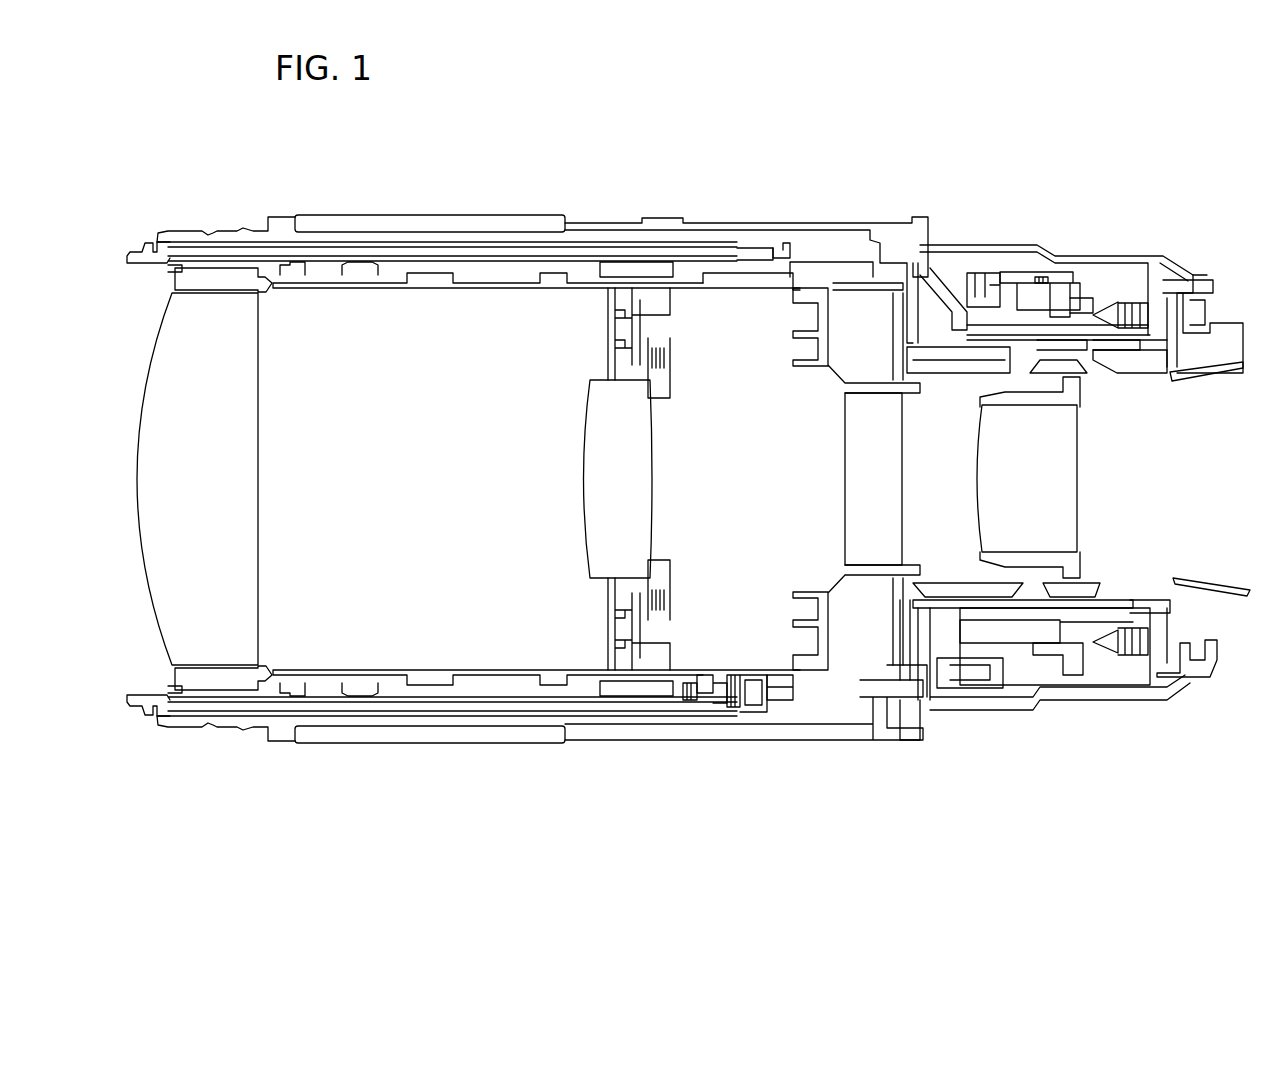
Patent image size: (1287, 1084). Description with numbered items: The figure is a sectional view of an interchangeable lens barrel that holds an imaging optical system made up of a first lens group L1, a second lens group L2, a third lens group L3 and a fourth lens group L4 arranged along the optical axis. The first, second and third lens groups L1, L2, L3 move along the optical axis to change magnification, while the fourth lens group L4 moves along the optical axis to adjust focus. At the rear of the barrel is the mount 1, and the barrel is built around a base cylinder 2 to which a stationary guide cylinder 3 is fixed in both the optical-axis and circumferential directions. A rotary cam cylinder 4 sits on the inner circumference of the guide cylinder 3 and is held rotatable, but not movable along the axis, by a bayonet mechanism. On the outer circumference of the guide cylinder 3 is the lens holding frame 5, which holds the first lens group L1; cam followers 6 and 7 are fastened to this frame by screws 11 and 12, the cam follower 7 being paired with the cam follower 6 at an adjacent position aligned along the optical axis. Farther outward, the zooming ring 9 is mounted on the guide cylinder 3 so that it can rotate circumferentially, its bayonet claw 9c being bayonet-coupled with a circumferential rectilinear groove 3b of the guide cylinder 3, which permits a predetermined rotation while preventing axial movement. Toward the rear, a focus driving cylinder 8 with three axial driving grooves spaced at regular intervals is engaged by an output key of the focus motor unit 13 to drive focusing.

The mount 1 is at (1218, 323).
The base cylinder 2 is at (1108, 257).
The guide cylinder 3 is at (822, 263).
The circumferential rectilinear groove 3b is at (778, 245).
The cam cylinder 4 is at (703, 273).
The lens holding frame 5 is at (467, 252).
The cam follower 6 is at (767, 710).
The cam follower 7 is at (693, 710).
The focus driving cylinder 8 is at (983, 350).
The zooming ring 9 is at (283, 227).
The bayonet claw 9c is at (782, 247).
The screw 11 is at (740, 715).
The screw 12 is at (707, 710).
The focus motor unit 13 is at (1040, 277).
The first lens group L1 is at (197, 479).
The second lens group L2 is at (618, 479).
The third lens group L3 is at (873, 479).
The fourth lens group L4 is at (1028, 477).